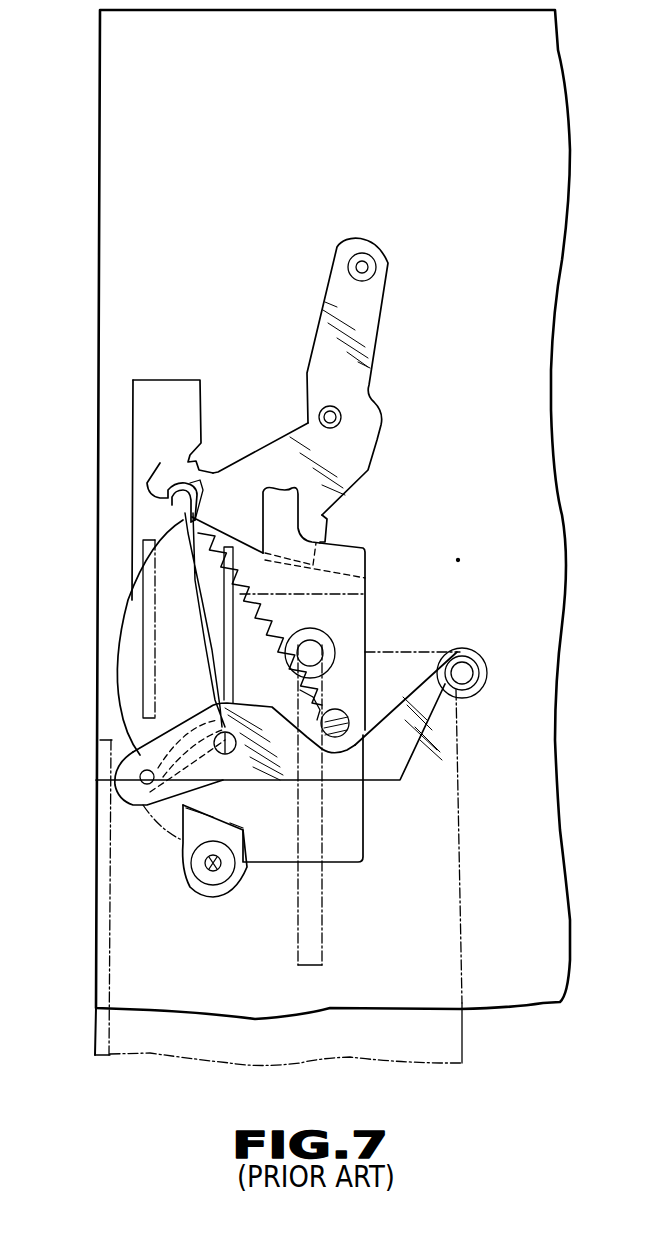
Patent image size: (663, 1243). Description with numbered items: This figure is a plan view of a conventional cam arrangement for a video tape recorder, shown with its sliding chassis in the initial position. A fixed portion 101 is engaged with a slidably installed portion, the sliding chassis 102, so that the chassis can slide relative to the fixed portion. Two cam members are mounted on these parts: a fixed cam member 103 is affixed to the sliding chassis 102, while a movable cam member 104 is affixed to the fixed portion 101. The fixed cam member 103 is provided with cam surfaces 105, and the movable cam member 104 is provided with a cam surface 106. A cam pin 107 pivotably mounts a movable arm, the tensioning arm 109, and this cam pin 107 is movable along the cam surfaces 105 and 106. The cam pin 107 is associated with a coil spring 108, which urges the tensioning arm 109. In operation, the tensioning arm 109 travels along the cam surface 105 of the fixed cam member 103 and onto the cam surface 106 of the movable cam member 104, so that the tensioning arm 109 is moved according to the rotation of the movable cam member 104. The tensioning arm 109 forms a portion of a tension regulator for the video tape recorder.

The fixed portion 101 is at (128, 290).
The sliding chassis 102 is at (140, 920).
The fixed cam member 103 is at (195, 608).
The movable cam member 104 is at (265, 447).
The cam surfaces 105 is at (225, 633).
The cam surface 106 is at (183, 513).
The cam pin 107 is at (128, 777).
The coil spring 108 is at (273, 643).
The tensioning arm 109 is at (400, 757).